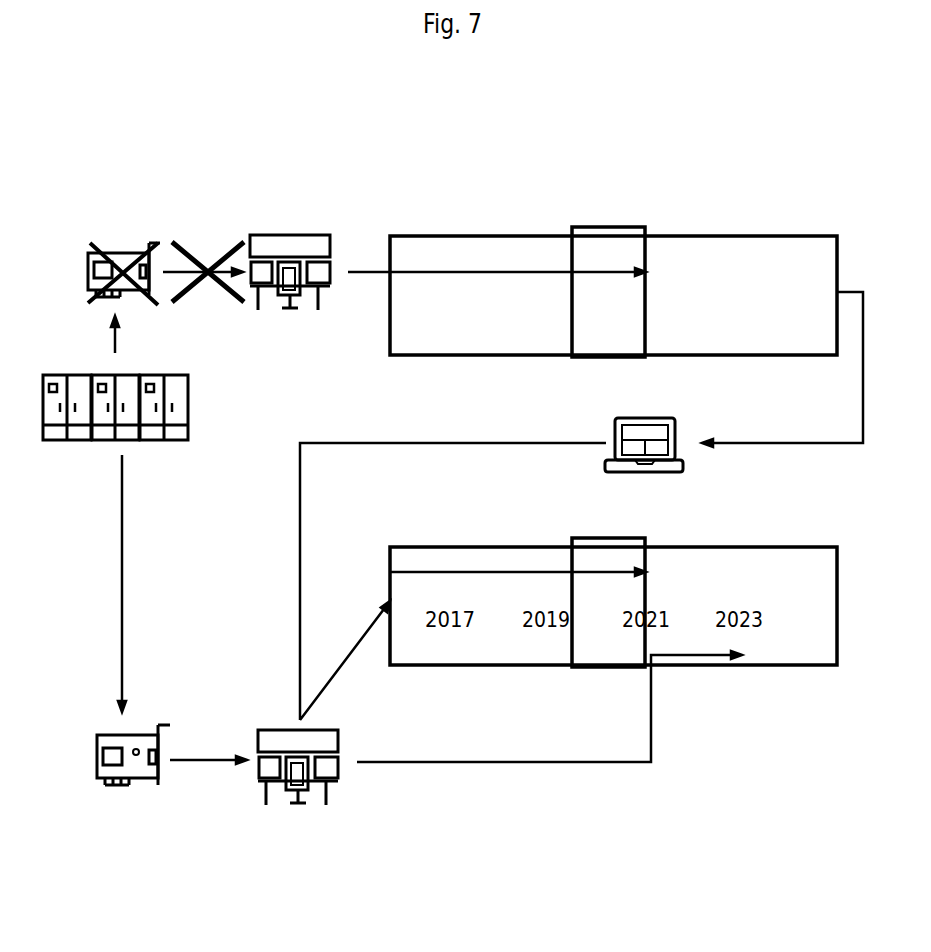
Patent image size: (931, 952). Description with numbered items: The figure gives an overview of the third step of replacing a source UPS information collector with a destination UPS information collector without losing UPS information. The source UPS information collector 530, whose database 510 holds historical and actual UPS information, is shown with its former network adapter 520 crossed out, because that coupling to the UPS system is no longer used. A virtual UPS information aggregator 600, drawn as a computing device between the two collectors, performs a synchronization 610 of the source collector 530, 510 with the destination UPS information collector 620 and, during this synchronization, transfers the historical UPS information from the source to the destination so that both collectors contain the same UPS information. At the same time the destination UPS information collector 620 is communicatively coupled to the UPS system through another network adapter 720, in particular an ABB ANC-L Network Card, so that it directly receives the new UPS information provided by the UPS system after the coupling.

The source UPS information collector database 510 is at (761, 222).
The obsolete hardware component (crossed out) 520 is at (108, 225).
The source UPS information collector 530 is at (273, 225).
The virtual UPS information aggregator 600 is at (707, 470).
The synchronization 610 is at (612, 220).
The destination UPS information collector 620 is at (302, 835).
The network adapter 720 is at (122, 814).